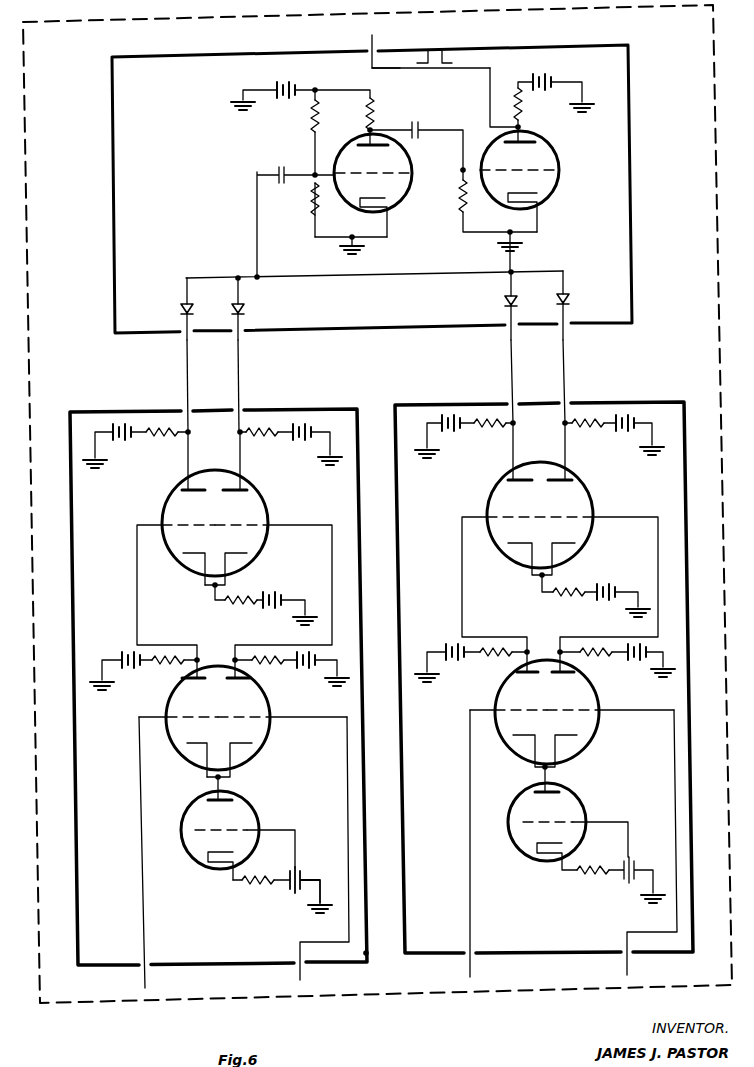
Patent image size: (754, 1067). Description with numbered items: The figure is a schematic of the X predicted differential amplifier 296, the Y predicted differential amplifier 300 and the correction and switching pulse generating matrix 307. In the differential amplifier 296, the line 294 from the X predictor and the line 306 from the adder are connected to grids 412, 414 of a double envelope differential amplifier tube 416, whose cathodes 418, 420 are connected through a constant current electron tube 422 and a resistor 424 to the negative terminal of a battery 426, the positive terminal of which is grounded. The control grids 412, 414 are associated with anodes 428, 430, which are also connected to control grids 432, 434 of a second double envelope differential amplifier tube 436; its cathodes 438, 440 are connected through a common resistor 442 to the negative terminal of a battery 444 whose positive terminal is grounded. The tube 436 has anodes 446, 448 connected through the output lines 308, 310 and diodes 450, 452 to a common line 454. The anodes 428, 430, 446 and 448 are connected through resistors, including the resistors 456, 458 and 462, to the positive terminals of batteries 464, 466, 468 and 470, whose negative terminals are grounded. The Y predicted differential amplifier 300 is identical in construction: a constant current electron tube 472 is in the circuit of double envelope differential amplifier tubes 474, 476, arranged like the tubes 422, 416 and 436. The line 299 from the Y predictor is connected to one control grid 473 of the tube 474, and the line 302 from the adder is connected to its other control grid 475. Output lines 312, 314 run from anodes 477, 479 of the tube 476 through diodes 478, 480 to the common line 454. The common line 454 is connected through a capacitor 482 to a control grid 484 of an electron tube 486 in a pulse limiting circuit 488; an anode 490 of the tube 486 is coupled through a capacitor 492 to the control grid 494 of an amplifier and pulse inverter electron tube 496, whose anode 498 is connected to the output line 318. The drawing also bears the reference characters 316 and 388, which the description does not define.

The line 294 is at (147, 975).
The X predicted differential amplifier 296 is at (366, 953).
The line 299 is at (471, 970).
The Y predicted differential amplifier 300 is at (667, 953).
The line 302 is at (627, 964).
The line 306 is at (302, 973).
The correction and switching pulse generating matrix 307 is at (632, 270).
The output line 308 is at (187, 355).
The output line 310 is at (239, 355).
The output line 312 is at (512, 350).
The output line 314 is at (565, 350).
The enclosure 316 is at (78, 1003).
The output line 318 is at (400, 68).
The input terminal 388 is at (447, 50).
The grid 412 is at (180, 718).
The grid 414 is at (262, 718).
The double envelope differential amplifier tube 416 is at (268, 745).
The cathode 418 is at (200, 760).
The cathode 420 is at (245, 760).
The constant current electron tube 422 is at (258, 815).
The resistor 424 is at (265, 886).
The battery 426 is at (300, 866).
The anode 428 is at (190, 675).
The anode 430 is at (250, 678).
The control grid 432 is at (170, 522).
The control grid 434 is at (265, 522).
The second double envelope differential amplifier tube 436 is at (262, 560).
The cathode 438 is at (185, 565).
The cathode 440 is at (258, 555).
The common resistor 442 is at (230, 600).
The battery 444 is at (265, 608).
The anode 446 is at (188, 470).
The anode 448 is at (240, 470).
The diode 450 is at (183, 308).
The diode 452 is at (245, 310).
The common line 454 is at (360, 278).
The resistor 456 is at (168, 658).
The resistor 458 is at (270, 658).
The resistor 462 is at (260, 428).
The battery 464 is at (128, 655).
The battery 466 is at (280, 668).
The battery 468 is at (152, 428).
The battery 470 is at (302, 440).
The constant current electron tube 472 is at (583, 805).
The control grid 473 is at (495, 708).
The double envelope differential amplifier tube 474 is at (597, 738).
The control grid 475 is at (596, 708).
The double envelope differential amplifier tube 476 is at (590, 538).
The anode 477 is at (510, 478).
The diode 478 is at (507, 310).
The anode 479 is at (568, 480).
The diode 480 is at (571, 303).
The capacitor 482 is at (257, 172).
The control grid 484 is at (398, 178).
The electron tube 486 is at (393, 205).
The pulse limiting circuit 488 is at (262, 140).
The anode 490 is at (390, 150).
The capacitor 492 is at (416, 124).
The control grid 494 is at (545, 172).
The amplifier and pulse inverter electron tube 496 is at (550, 200).
The anode 498 is at (538, 140).